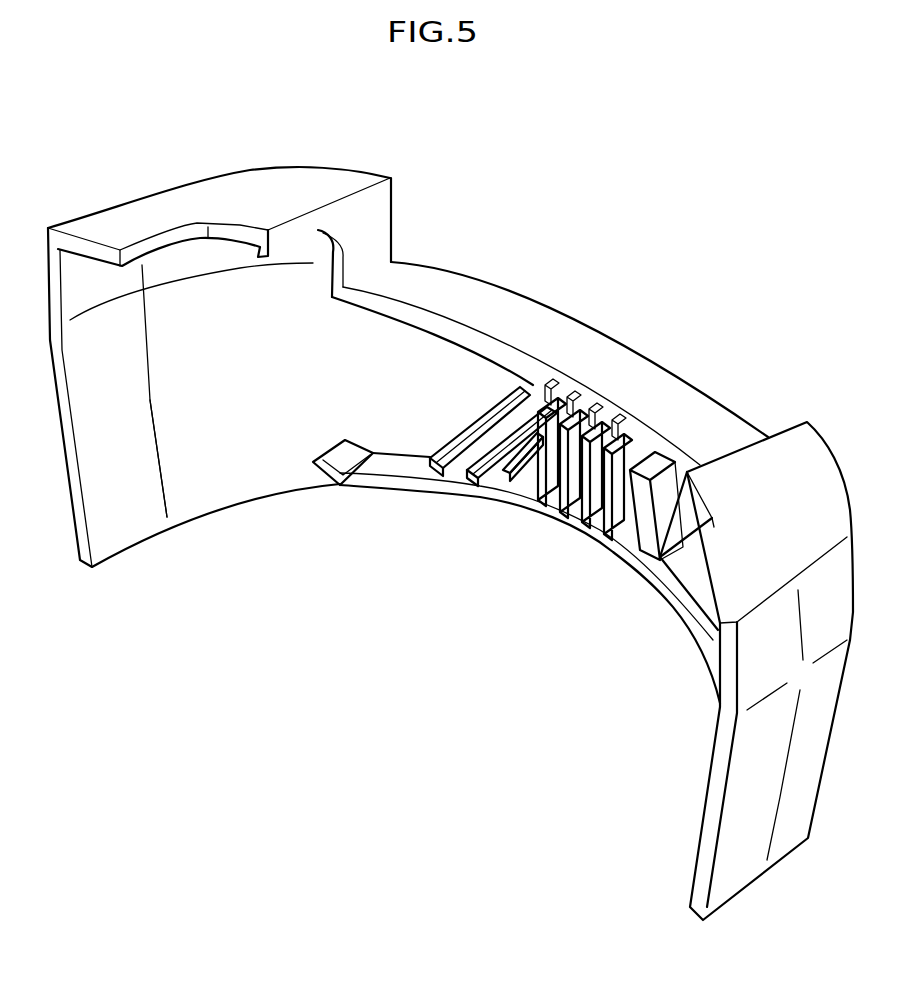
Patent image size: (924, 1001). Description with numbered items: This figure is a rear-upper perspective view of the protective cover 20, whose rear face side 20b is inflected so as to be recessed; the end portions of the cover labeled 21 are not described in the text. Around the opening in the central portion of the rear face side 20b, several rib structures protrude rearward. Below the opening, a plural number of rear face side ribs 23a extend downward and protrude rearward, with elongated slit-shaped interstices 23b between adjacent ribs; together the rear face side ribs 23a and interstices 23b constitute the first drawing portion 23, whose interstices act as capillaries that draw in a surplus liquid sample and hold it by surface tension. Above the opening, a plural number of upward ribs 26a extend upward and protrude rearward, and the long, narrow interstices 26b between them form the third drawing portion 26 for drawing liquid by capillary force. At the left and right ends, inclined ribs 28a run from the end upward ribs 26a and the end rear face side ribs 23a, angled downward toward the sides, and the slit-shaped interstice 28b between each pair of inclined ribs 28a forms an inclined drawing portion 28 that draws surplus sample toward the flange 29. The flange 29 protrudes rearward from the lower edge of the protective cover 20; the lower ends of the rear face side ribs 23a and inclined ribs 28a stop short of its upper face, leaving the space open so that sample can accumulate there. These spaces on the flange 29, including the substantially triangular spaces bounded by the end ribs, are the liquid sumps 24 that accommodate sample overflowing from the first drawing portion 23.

The protective cover 20 is at (731, 196).
The rear face side 20b is at (307, 363).
The block portion 21 is at (222, 200).
The first drawing portion 23 is at (593, 644).
The rear face side ribs 23a is at (509, 465).
The interstices 23b is at (604, 529).
The liquid sumps 24 is at (500, 472).
The third drawing portion 26 is at (755, 309).
The upward ribs 26a is at (586, 398).
The interstices 26b is at (670, 453).
The inclined drawing portion 28 is at (562, 224).
The inclined ribs 28a is at (514, 421).
The interstices 28b is at (545, 392).
The flange 29 is at (384, 463).